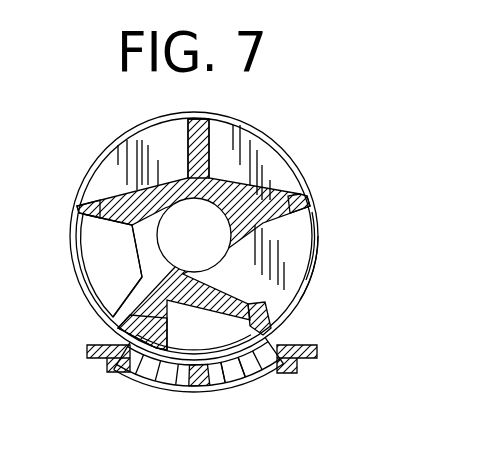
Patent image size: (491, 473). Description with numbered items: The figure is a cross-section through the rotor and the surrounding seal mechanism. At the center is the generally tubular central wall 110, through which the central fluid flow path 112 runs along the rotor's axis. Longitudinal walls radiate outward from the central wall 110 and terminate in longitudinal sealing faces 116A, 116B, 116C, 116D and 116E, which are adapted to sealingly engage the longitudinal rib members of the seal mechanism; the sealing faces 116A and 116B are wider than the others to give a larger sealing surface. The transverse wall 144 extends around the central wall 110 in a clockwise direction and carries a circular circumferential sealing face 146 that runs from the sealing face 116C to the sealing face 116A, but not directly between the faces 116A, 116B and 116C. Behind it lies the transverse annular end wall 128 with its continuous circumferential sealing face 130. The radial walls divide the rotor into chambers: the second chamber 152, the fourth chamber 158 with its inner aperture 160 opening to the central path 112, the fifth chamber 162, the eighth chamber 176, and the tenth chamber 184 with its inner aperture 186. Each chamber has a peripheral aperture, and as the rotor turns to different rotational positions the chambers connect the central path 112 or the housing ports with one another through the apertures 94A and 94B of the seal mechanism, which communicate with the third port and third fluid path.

The aperture 94A is at (168, 390).
The aperture 94B is at (236, 372).
The tubular central wall 110 is at (136, 265).
The central fluid flow path 112 is at (142, 290).
The longitudinal sealing face 116A is at (266, 318).
The longitudinal sealing face 116B is at (115, 346).
The longitudinal sealing face 116C is at (76, 208).
The longitudinal sealing face 116D is at (203, 116).
The longitudinal sealing face 116E is at (305, 199).
The transverse annular end wall 128 is at (72, 222).
The circumferential sealing face 130 is at (70, 240).
The transverse wall 144 is at (300, 283).
The circumferential sealing face 146 is at (308, 256).
The second chamber 152 is at (160, 375).
The fourth chamber 158 is at (73, 256).
The inner aperture 160 is at (140, 244).
The fifth chamber 162 is at (115, 165).
The eighth chamber 176 is at (268, 170).
The tenth chamber 184 is at (297, 231).
The inner aperture 186 is at (229, 226).